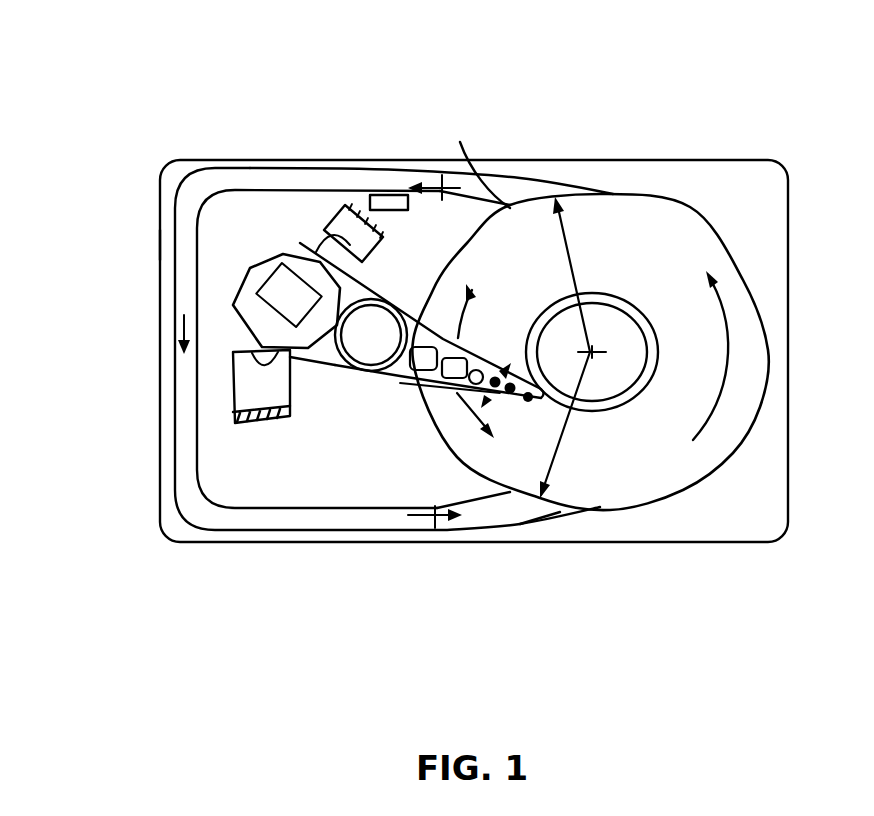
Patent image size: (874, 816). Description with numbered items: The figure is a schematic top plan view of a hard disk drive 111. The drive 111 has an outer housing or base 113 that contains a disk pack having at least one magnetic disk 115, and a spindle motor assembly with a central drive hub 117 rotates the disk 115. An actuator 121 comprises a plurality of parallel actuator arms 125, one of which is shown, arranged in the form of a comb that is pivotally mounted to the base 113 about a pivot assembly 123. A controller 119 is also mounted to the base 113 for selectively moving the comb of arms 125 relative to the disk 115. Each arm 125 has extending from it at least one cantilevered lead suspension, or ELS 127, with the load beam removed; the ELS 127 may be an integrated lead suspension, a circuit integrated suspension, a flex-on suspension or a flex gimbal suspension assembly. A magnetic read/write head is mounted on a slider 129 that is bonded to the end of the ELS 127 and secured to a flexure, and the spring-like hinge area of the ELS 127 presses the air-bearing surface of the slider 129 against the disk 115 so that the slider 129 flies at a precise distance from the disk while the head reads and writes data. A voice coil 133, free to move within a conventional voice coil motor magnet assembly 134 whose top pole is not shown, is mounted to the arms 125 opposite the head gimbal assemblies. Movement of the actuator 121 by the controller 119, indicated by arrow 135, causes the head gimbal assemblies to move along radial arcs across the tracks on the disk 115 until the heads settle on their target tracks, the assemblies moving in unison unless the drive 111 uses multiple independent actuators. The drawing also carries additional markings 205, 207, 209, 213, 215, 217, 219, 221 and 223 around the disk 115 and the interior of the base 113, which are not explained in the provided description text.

The drive 111 is at (752, 72).
The outer housing or base 113 is at (655, 162).
The magnetic disk 115 is at (665, 226).
The central drive hub 117 is at (617, 296).
The controller 119 is at (407, 205).
The actuator 121 is at (392, 345).
The pivot assembly 123 is at (348, 372).
The actuator arm 125 is at (418, 312).
The ELS (lead suspension) 127 is at (465, 341).
The slider 129 is at (527, 407).
The voice coil 133 is at (262, 260).
The voice coil motor magnet assembly 134 is at (333, 226).
The arrow indicating actuator movement 135 is at (457, 395).
The disk rotation / airflow direction 205 is at (472, 288).
The radial direction arrow 207 is at (578, 254).
The radial direction arrow 209 is at (560, 453).
The flow diverter 213 is at (475, 166).
The flow diverter 215 is at (537, 497).
The housing side wall 217 is at (156, 236).
The air flow channel 219 is at (397, 185).
The shroud wall 221 is at (507, 178).
The channel wall 223 is at (468, 510).